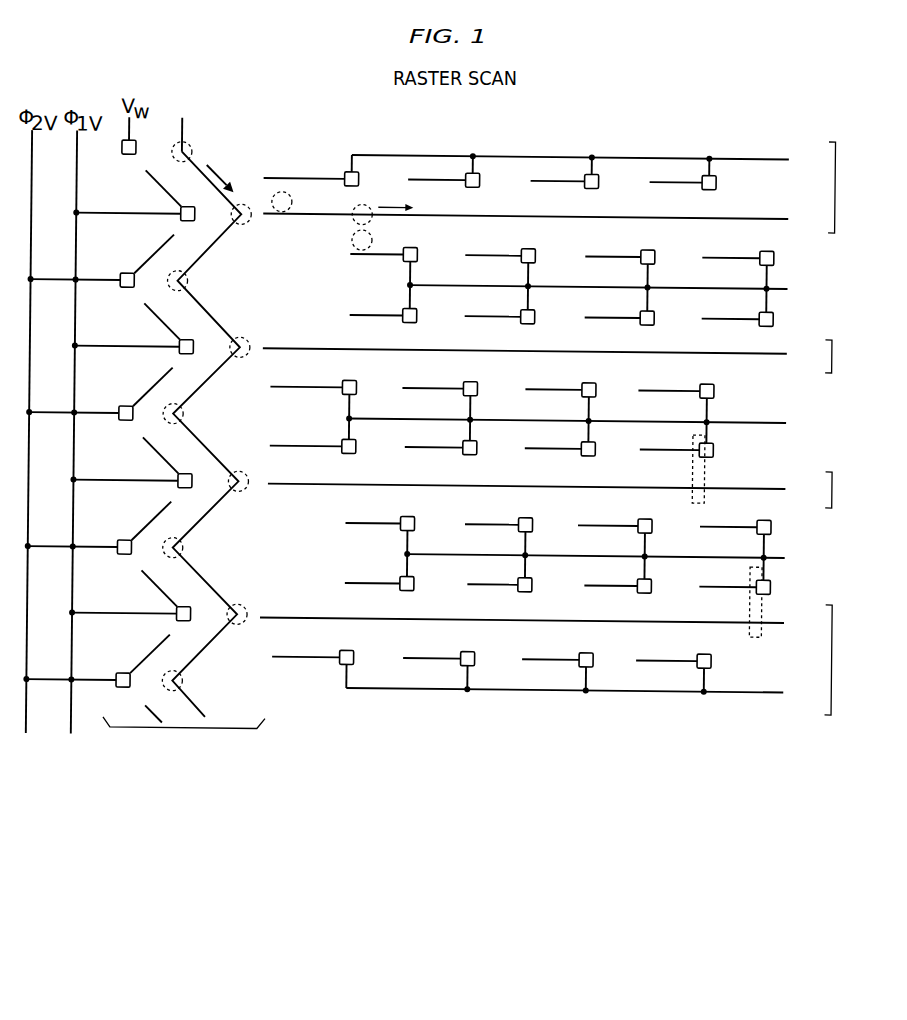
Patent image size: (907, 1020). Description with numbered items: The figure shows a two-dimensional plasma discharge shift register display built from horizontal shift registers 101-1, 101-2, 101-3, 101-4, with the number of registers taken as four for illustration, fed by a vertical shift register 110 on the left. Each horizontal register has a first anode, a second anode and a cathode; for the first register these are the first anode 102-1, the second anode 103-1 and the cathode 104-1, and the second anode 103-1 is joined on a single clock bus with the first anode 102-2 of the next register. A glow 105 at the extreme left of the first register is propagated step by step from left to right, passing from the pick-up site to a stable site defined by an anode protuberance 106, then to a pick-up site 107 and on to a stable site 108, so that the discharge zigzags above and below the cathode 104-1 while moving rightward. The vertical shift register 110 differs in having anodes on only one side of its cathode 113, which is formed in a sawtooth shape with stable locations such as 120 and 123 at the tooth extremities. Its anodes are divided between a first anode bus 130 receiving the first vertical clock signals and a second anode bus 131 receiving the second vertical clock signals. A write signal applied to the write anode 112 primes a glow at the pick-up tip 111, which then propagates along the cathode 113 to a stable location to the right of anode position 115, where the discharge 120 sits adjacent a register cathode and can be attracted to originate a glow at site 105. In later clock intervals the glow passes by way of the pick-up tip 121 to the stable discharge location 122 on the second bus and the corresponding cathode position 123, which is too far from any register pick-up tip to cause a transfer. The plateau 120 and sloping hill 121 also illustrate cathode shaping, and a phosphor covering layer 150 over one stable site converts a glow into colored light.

The shift register 101-1 is at (615, 188).
The shift register 101-2 is at (570, 310).
The shift register 101-3 is at (573, 445).
The shift register 101-4 is at (568, 615).
The first anode 102-1 is at (514, 156).
The first anode 102-2 is at (531, 298).
The second anode 103-1 is at (534, 255).
The cathode 104-1 is at (601, 215).
The glow 105 is at (288, 192).
The anode protuberance 106 is at (356, 175).
The pick-up site 107 is at (350, 245).
The stable site 108 is at (416, 254).
The vertical shift register 110 is at (187, 450).
The pick-up tip 111 is at (150, 186).
The write anode 112 is at (125, 158).
The cathode 113 is at (182, 130).
The anode position 115 is at (177, 219).
The stable discharge location 120 is at (246, 226).
The pick-up tip 121 is at (150, 255).
The stable discharge location 122 is at (125, 292).
The stable discharge location 123 is at (180, 283).
The first anode bus 130 is at (74, 737).
The second anode bus 131 is at (29, 737).
The covering layer 150 is at (705, 464).